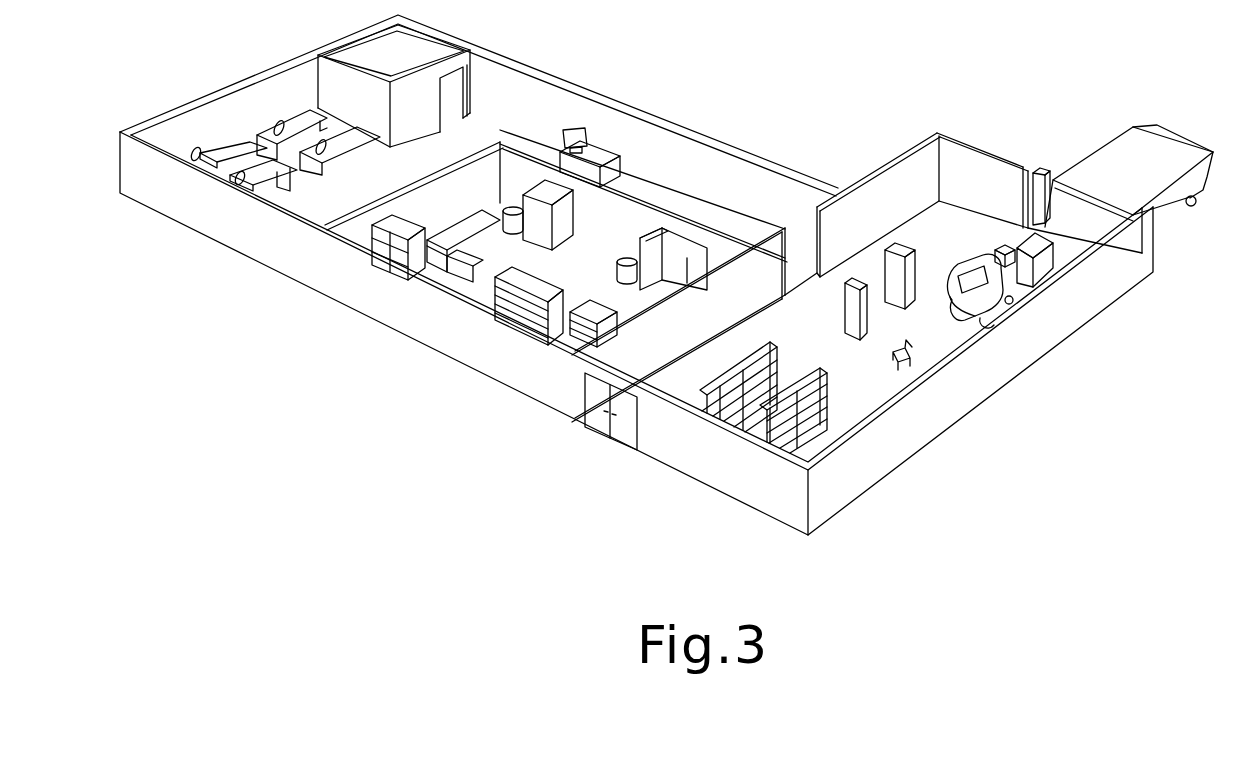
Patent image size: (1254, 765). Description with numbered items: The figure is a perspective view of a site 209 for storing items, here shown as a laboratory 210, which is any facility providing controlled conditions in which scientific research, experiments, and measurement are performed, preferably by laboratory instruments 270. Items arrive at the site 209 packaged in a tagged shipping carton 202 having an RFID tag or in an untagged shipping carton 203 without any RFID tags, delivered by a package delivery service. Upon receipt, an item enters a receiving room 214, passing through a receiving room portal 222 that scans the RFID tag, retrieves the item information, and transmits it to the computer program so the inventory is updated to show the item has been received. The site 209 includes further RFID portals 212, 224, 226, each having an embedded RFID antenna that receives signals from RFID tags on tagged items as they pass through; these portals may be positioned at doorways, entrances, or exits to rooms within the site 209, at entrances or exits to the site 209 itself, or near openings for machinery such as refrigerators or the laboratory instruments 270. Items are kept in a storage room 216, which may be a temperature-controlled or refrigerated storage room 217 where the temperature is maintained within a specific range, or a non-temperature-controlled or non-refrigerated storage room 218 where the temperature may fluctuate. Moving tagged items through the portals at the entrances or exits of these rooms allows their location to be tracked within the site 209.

The tagged shipping carton 202 is at (1079, 299).
The untagged shipping carton 203 is at (1023, 250).
The site 209 is at (666, 275).
The laboratory 210 is at (398, 452).
The RFID portal 212 is at (1040, 172).
The receiving room 214 is at (857, 388).
The storage room 216 is at (413, 305).
The refrigerated storage room 217 is at (513, 328).
The non-refrigerated storage room 218 is at (428, 269).
The receiving room portal 222 is at (902, 257).
The RFID portal 224 is at (653, 247).
The RFID portal 226 is at (535, 202).
The laboratory instruments 270 is at (277, 125).